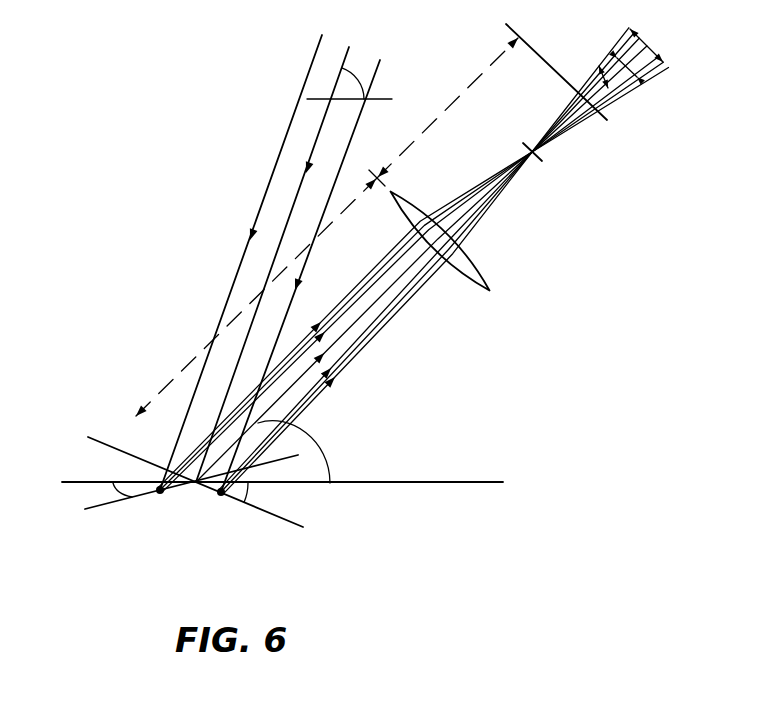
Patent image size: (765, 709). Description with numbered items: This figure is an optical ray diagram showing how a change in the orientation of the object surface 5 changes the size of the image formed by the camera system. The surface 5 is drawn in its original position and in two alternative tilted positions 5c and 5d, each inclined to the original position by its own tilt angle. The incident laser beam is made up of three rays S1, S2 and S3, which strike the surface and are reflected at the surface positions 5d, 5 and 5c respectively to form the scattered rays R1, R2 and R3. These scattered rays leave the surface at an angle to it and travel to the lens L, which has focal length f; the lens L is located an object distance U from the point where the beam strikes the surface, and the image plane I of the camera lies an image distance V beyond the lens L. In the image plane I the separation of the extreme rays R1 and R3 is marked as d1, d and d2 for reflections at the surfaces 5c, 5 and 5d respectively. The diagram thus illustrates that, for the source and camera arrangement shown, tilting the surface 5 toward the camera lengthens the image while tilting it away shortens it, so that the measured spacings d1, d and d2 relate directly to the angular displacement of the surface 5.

The object surface 5 is at (432, 484).
The tilted surface position 5c is at (102, 509).
The tilted surface position 5d is at (290, 528).
The incident ray S1 is at (278, 160).
The incident ray S2 is at (315, 145).
The incident ray S3 is at (346, 153).
The object distance U is at (256, 297).
The image distance V is at (443, 112).
The lens L is at (492, 292).
The focal length f is at (508, 162).
The scattered ray R1 is at (360, 290).
The scattered ray R2 is at (393, 290).
The scattered ray R3 is at (430, 292).
The image plane I is at (612, 125).
The image separation d is at (648, 70).
The image separation d1 is at (600, 66).
The image separation d2 is at (649, 45).